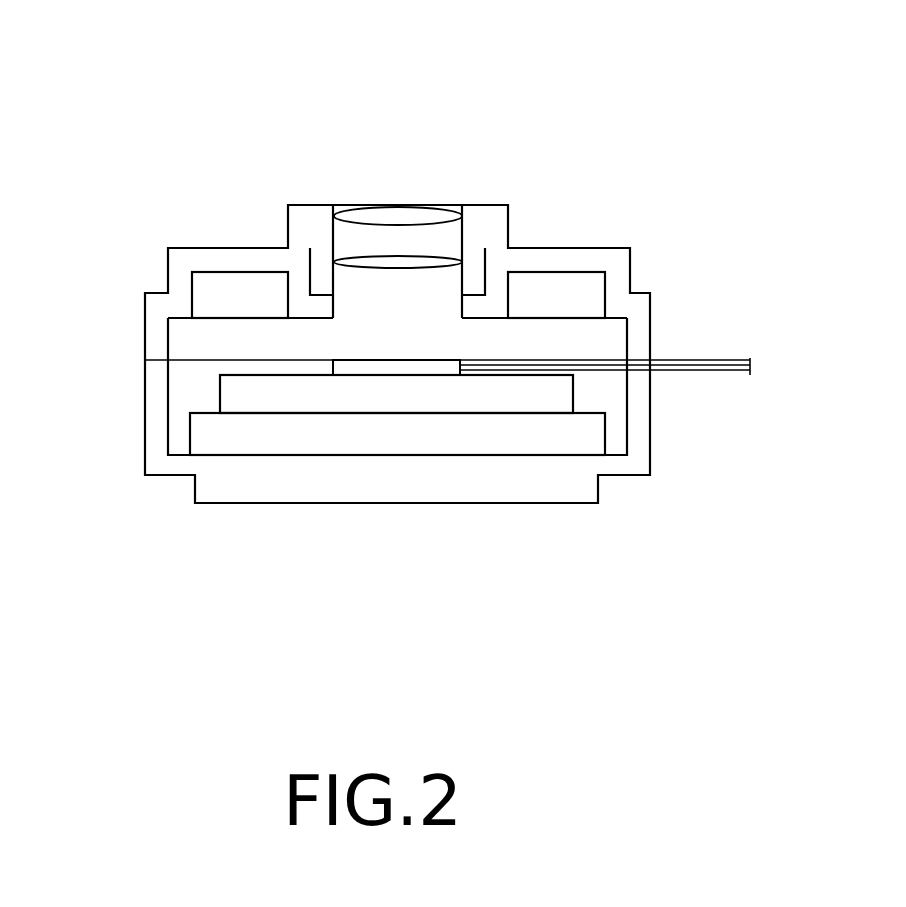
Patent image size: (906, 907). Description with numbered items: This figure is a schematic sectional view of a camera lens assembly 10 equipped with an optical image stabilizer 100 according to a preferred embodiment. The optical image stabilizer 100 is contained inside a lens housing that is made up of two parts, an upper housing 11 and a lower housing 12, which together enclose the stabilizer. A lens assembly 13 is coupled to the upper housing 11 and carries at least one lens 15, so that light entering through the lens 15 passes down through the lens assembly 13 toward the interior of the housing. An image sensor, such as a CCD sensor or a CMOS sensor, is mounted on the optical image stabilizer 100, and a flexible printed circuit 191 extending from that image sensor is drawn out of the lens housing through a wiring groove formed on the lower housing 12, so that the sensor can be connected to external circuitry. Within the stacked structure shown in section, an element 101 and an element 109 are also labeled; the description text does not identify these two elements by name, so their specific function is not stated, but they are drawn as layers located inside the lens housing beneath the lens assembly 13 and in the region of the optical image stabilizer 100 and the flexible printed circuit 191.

The camera lens assembly 10 is at (177, 37).
The upper housing 11 is at (650, 264).
The lower housing 12 is at (610, 490).
The lens assembly 13 is at (532, 203).
The lens 15 is at (403, 215).
The optical image stabilizer 100 is at (200, 391).
The substrate 101 is at (200, 438).
The filter 109 is at (398, 366).
The flexible printed circuit 191 is at (724, 372).